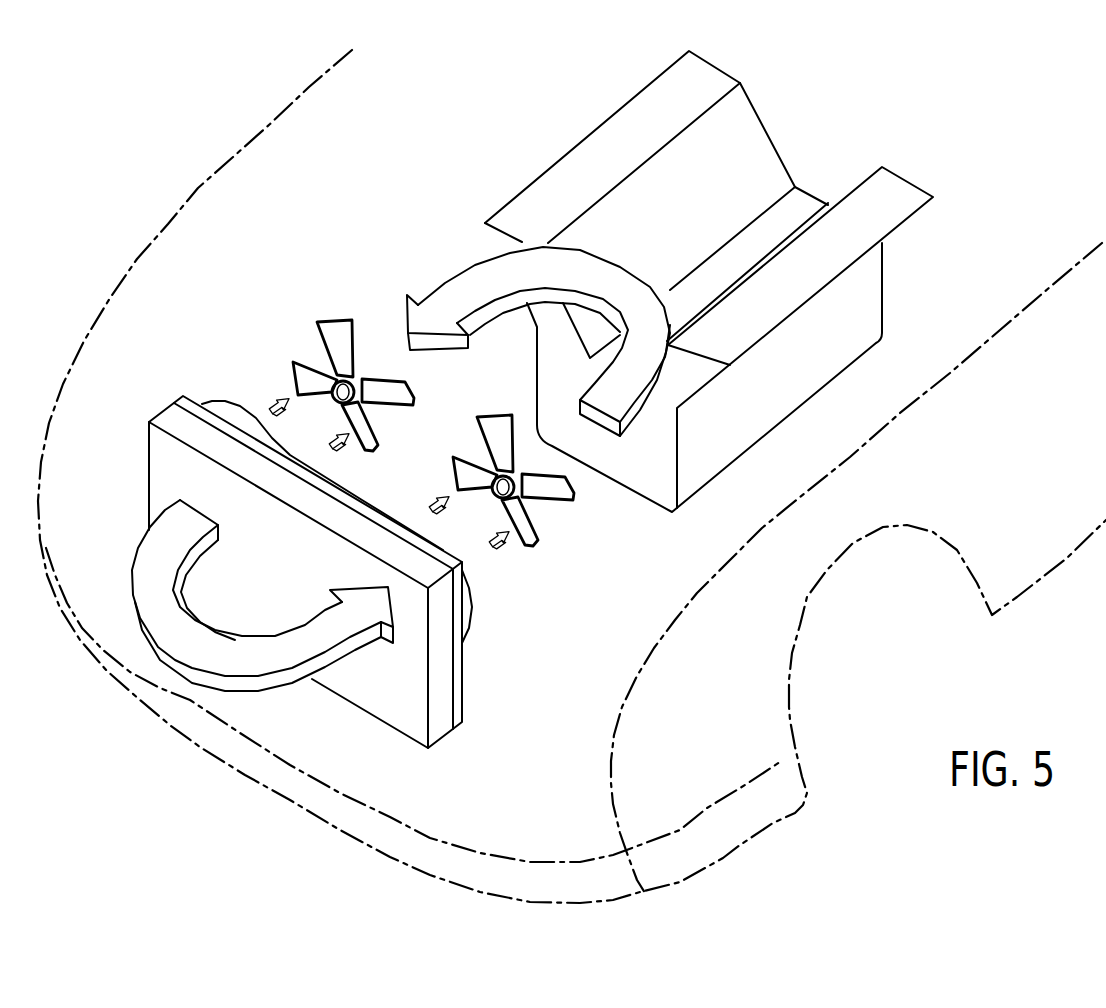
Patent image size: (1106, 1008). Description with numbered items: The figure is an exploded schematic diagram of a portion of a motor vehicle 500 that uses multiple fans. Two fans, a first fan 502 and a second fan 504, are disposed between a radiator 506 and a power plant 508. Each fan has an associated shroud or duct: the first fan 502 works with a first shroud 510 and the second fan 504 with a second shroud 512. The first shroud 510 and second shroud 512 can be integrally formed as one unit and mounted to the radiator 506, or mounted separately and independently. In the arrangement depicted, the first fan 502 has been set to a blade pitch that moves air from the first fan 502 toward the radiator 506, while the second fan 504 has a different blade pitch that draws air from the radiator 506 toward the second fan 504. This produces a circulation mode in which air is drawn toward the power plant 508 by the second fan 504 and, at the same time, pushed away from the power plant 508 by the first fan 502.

The motor vehicle 500 is at (176, 206).
The first fan 502 is at (335, 325).
The second fan 504 is at (560, 500).
The radiator 506 is at (440, 729).
The power plant 508 is at (800, 390).
The first shroud 510 is at (232, 398).
The second shroud 512 is at (474, 609).